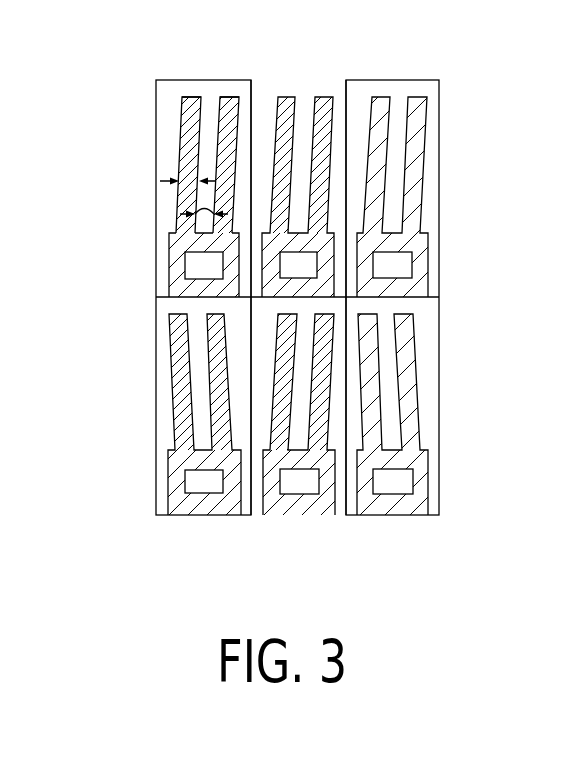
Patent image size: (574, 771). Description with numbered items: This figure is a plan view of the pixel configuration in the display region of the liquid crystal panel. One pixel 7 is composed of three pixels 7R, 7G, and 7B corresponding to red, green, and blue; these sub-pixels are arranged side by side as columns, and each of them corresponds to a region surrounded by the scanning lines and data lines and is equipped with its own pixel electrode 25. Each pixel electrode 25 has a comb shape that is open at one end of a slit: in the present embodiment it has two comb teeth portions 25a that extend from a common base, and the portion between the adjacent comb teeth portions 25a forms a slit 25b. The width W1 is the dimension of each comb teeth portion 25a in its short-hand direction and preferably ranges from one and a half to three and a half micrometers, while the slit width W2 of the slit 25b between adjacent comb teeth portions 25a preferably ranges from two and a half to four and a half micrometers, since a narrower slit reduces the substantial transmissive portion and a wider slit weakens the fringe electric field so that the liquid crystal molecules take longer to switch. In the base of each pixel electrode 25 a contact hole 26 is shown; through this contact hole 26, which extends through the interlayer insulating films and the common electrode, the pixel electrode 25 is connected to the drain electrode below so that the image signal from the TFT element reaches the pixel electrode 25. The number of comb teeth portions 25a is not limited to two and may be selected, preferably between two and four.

The pixel 7 is at (297, 298).
The red pixel 7R is at (207, 78).
The green pixel 7G is at (298, 78).
The blue pixel 7B is at (392, 297).
The pixel electrode 25 is at (288, 295).
The comb teeth portion 25a is at (161, 154).
The slit 25b is at (211, 102).
The contact hole 26 is at (195, 265).
The width of comb teeth portion W1 is at (160, 181).
The slit width W2 is at (180, 214).